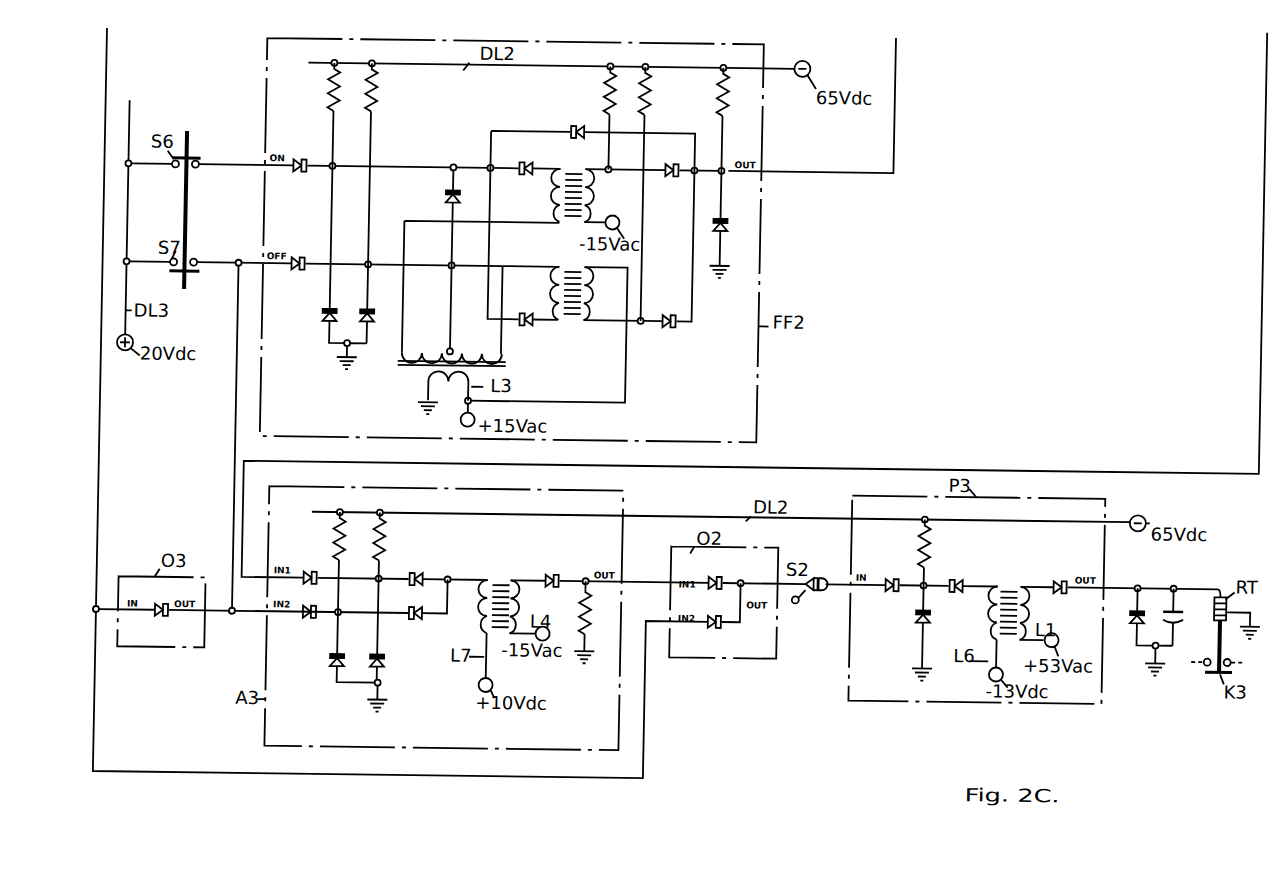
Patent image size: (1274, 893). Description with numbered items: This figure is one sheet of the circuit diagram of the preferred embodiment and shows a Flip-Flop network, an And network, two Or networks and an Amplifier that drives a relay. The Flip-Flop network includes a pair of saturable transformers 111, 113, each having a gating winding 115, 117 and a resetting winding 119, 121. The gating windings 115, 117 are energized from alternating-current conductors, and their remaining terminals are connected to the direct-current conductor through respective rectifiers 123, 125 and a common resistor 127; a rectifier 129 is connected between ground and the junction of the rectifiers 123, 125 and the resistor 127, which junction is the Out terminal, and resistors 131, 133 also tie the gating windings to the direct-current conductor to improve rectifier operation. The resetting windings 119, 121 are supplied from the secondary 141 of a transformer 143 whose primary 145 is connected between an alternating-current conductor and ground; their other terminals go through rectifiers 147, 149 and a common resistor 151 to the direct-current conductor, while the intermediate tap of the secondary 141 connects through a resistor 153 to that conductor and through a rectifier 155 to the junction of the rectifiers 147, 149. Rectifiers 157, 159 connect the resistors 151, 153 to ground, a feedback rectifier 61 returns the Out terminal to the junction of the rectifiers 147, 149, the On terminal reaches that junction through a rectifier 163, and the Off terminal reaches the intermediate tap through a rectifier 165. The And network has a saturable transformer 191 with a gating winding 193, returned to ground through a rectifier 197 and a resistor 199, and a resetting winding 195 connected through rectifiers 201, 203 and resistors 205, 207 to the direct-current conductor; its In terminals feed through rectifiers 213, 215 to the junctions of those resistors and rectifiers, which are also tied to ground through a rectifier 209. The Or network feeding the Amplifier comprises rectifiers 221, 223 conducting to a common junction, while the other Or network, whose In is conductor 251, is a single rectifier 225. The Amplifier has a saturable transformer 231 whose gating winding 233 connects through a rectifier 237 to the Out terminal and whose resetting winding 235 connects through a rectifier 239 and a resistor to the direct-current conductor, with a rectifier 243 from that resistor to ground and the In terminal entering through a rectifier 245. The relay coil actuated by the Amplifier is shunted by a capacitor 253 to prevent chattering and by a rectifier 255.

The common resistor 151 is at (328, 92).
The resistor 153 is at (380, 92).
The resistor 131 is at (606, 95).
The resistor 133 is at (652, 90).
The common resistor 127 is at (716, 104).
The diode 61 is at (575, 121).
The rectifier 147 is at (530, 157).
The saturable transformer 111 is at (588, 158).
The resetting winding 119 is at (553, 190).
The gating winding 115 is at (598, 186).
The rectifier 123 is at (676, 170).
The rectifier 129 is at (727, 224).
The rectifier 155 is at (448, 192).
The rectifier 163 is at (301, 170).
The diode 165 is at (303, 254).
The rectifier 157 is at (327, 312).
The rectifier 159 is at (366, 306).
The resetting winding 121 is at (554, 288).
The gating winding 117 is at (598, 288).
The saturable transformer 113 is at (589, 341).
The rectifier 125 is at (674, 308).
The rectifier 149 is at (531, 320).
The secondary 141 is at (423, 354).
The transformer 143 is at (418, 387).
The primary 145 is at (448, 386).
The conductor 251 is at (107, 448).
The resistor 207 is at (343, 530).
The resistor 205 is at (396, 530).
The rectifier 213 is at (311, 568).
The rectifier 215 is at (312, 618).
The rectifier 201 is at (421, 569).
The rectifier 203 is at (421, 616).
The resetting winding 195 is at (488, 620).
The saturable transformer 191 is at (520, 568).
The gating winding 193 is at (530, 596).
The rectifier 197 is at (563, 570).
The resistor 199 is at (597, 614).
The zener diode 209 is at (398, 662).
The rectifier 225 is at (173, 603).
The rectifier 221 is at (728, 572).
The rectifier 223 is at (727, 620).
The rectifier 245 is at (898, 582).
The rectifier 243 is at (924, 608).
The rectifier 239 is at (967, 569).
The resetting winding 235 is at (998, 600).
The saturable transformer 231 is at (1025, 568).
The gating winding 233 is at (1043, 598).
The rectifier 237 is at (1070, 568).
The rectifier 255 is at (1140, 615).
The capacitor 253 is at (1191, 610).